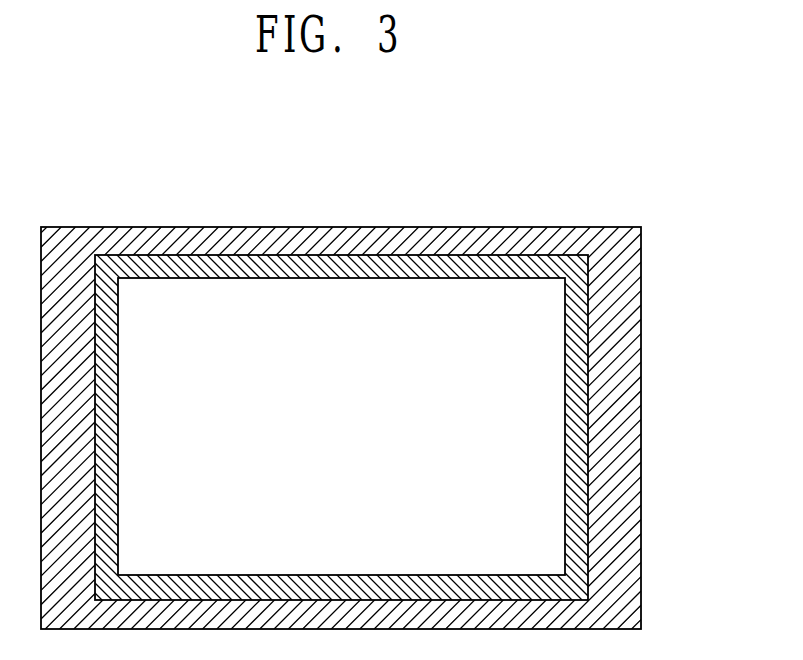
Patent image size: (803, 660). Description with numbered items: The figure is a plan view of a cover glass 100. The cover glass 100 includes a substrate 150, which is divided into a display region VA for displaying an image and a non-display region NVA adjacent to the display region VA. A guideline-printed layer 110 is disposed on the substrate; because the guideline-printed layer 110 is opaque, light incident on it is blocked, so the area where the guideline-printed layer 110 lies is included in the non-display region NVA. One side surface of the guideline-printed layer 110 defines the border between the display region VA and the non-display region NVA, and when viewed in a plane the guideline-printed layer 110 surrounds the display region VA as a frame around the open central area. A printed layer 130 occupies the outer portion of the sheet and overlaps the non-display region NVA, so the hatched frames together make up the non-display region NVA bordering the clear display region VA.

The cover glass 100 is at (587, 147).
The guideline-printed layer 110 is at (577, 367).
The printed layer 130 is at (627, 323).
The substrate 150 is at (642, 280).
The display region VA is at (370, 304).
The non-display region NVA is at (437, 243).